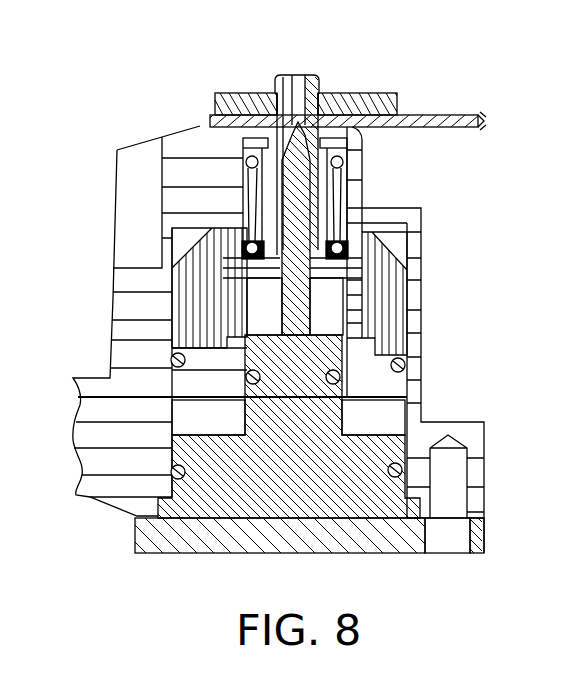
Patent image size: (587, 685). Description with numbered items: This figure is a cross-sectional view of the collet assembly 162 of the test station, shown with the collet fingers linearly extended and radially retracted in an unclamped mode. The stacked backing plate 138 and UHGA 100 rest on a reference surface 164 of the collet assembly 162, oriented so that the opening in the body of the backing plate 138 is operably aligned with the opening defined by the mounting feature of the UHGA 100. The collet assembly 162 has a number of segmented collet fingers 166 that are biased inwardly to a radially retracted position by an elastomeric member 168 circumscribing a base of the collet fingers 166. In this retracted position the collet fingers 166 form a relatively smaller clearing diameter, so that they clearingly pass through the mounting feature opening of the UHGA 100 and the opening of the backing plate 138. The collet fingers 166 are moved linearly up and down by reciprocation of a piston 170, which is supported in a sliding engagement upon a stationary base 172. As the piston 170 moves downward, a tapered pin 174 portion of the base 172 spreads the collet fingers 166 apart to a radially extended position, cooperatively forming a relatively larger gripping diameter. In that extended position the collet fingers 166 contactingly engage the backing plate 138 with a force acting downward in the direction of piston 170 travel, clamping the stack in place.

The collet assembly 162 is at (180, 46).
The reference surface 164 is at (249, 95).
The collet fingers 166 is at (298, 74).
The backing plate 138 is at (222, 98).
The UHGA 100 is at (215, 120).
The tapered pin 174 is at (293, 177).
The elastomeric member 168 is at (340, 250).
The piston 170 is at (187, 286).
The stationary base 172 is at (293, 500).